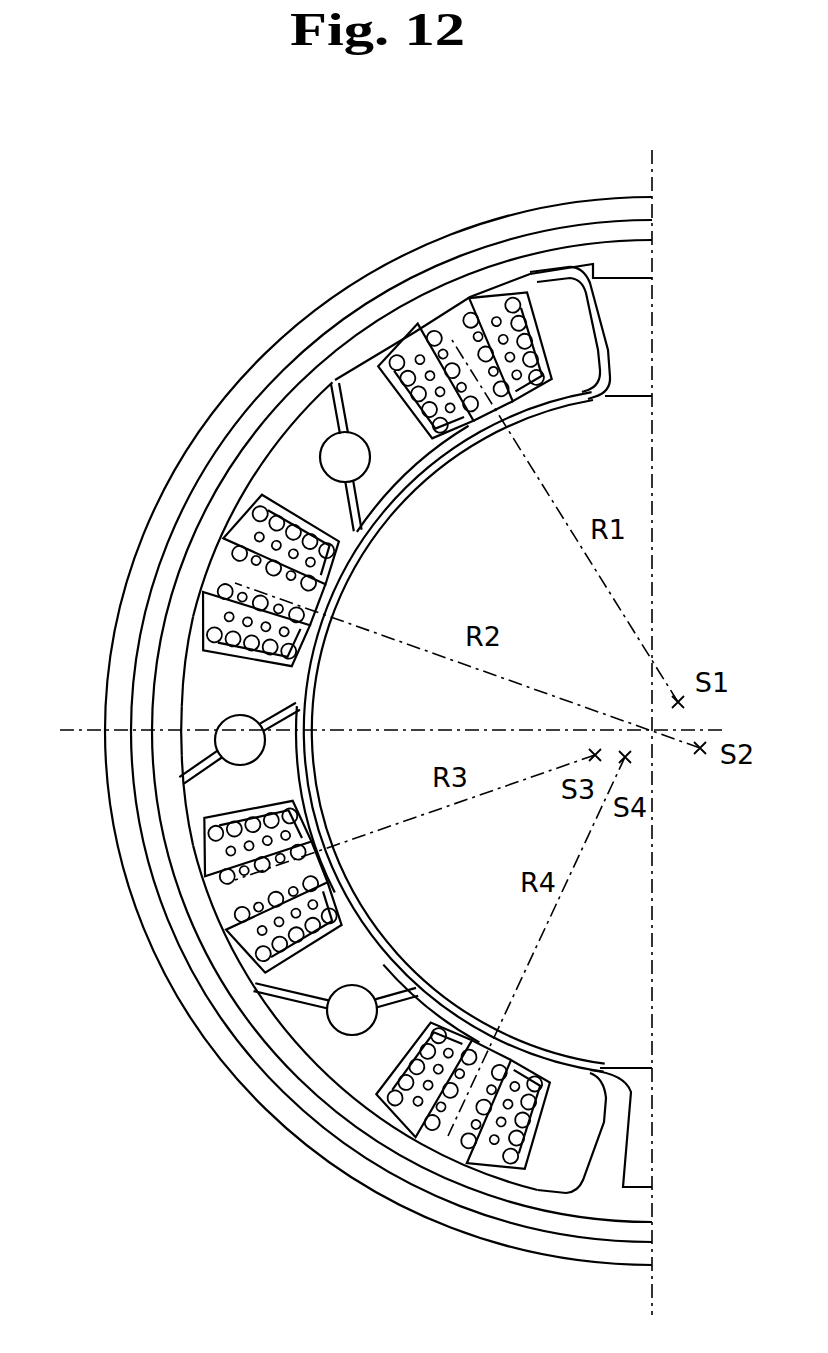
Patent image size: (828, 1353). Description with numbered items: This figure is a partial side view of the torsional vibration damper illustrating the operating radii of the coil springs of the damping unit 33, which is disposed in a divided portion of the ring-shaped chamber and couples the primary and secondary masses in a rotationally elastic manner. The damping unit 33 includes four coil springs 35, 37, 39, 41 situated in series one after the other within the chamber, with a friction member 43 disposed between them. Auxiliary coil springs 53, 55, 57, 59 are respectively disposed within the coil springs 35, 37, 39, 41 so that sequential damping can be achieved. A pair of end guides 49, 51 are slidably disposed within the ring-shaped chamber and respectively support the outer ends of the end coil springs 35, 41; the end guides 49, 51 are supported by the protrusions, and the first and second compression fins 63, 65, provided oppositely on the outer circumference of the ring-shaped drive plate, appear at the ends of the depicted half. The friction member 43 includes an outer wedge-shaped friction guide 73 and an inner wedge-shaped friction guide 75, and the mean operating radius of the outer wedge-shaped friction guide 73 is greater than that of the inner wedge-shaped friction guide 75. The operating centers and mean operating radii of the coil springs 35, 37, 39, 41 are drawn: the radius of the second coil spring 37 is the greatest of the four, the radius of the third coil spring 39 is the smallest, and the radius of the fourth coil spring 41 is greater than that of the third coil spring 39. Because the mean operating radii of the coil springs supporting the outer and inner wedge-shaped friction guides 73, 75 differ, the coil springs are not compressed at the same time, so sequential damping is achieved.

The damping unit 33 is at (141, 773).
The coil spring 35 is at (462, 333).
The coil spring 37 is at (240, 880).
The coil spring 39 is at (252, 577).
The coil spring 41 is at (462, 1113).
The friction member 43 is at (293, 386).
The end guide 49 is at (528, 333).
The end guide 51 is at (525, 1185).
The auxiliary coil spring 53 is at (433, 337).
The auxiliary coil spring 55 is at (243, 594).
The auxiliary coil spring 57 is at (245, 905).
The auxiliary coil spring 59 is at (466, 1128).
The first compression fin 63 is at (613, 287).
The second compression fin 65 is at (633, 1200).
The outer wedge-shaped friction guide 73 is at (185, 660).
The inner wedge-shaped friction guide 75 is at (190, 800).